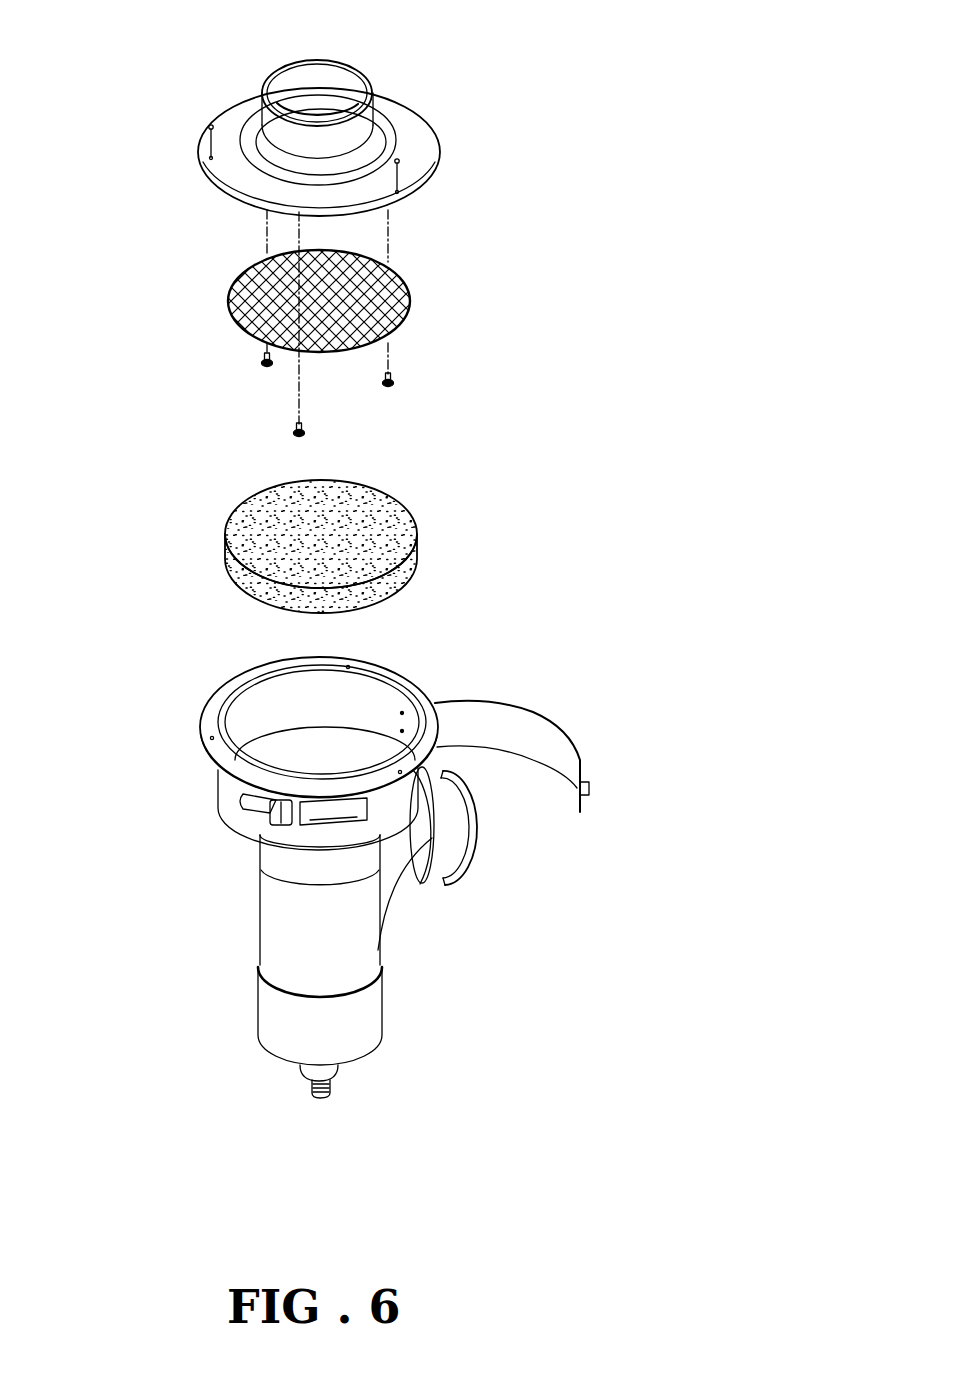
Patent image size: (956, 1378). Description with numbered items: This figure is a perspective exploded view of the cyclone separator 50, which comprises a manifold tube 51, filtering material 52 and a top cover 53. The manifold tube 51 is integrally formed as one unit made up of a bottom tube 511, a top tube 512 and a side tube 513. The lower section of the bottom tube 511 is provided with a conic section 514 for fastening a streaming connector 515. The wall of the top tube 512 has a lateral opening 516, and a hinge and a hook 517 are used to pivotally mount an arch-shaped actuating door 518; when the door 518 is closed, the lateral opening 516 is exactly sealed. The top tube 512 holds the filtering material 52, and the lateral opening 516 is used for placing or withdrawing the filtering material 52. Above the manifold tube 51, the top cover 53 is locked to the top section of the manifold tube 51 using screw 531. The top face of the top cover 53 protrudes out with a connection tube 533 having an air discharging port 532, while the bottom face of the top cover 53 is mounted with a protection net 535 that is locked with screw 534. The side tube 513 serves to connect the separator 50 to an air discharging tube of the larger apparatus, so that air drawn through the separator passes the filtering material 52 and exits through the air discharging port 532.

The cyclone separator 50 is at (522, 528).
The manifold tube 51 is at (275, 913).
The bottom tube 511 is at (355, 1025).
The top tube 512 is at (225, 693).
The side tube 513 is at (448, 818).
The conic section 514 is at (302, 1068).
The streaming connector 515 is at (328, 1090).
The lateral opening 516 is at (423, 782).
The hook 517 is at (262, 810).
The actuating door 518 is at (537, 718).
The filtering material 52 is at (240, 528).
The top cover 53 is at (228, 105).
The screw 531 is at (393, 162).
The air discharging port 532 is at (297, 80).
The connection tube 533 is at (363, 123).
The screw 534 is at (393, 383).
The protection net 535 is at (228, 292).